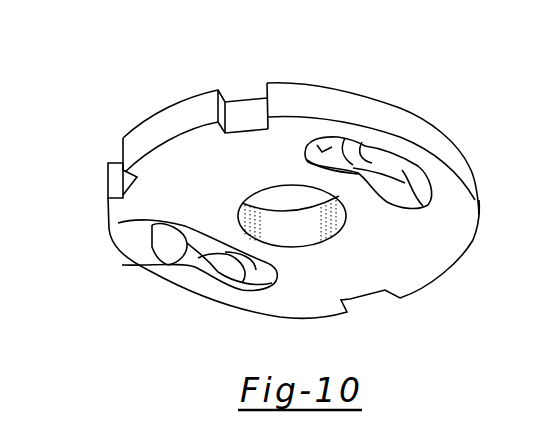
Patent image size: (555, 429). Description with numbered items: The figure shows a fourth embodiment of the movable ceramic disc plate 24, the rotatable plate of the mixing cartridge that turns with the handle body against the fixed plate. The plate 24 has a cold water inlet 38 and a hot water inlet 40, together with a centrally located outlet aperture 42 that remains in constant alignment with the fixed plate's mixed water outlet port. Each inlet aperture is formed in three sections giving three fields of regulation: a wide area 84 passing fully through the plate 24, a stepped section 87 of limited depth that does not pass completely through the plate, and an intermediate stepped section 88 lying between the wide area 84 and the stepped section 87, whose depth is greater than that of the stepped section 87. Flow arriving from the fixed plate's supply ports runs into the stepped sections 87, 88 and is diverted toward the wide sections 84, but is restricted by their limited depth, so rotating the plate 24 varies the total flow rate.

The movable ceramic disc plate 24 is at (165, 155).
The cold water inlet 38 is at (400, 165).
The hot water inlet 40 is at (118, 223).
The outlet aperture 42 is at (287, 220).
The wide area 84 is at (122, 265).
The stepped section 87 is at (248, 281).
The intermediate stepped section 88 is at (200, 273).